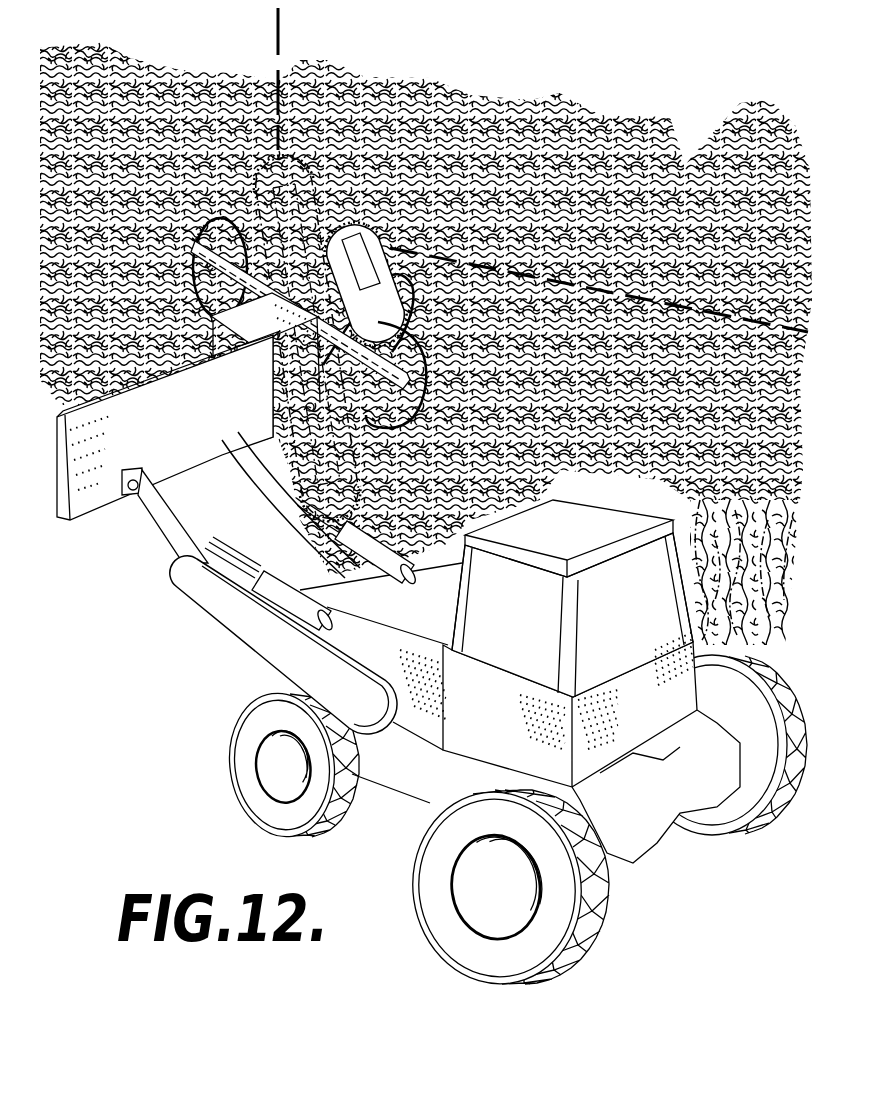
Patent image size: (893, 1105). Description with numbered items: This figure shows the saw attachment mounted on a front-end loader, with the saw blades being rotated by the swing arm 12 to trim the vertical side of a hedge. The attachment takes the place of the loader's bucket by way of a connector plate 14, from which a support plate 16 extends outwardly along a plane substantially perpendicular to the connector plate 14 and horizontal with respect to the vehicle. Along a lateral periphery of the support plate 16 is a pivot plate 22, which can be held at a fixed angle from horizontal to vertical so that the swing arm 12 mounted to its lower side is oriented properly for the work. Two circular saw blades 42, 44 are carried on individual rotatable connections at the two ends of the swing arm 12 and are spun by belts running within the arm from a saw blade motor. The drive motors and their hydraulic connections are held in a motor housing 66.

The swing arm 12 is at (464, 713).
The connector plate 14 is at (184, 422).
The support plate 16 is at (273, 482).
The pivot plate 22 is at (398, 277).
The circular saw blade 42 is at (423, 348).
The circular saw blade 44 is at (205, 218).
The motor housing 66 is at (203, 302).